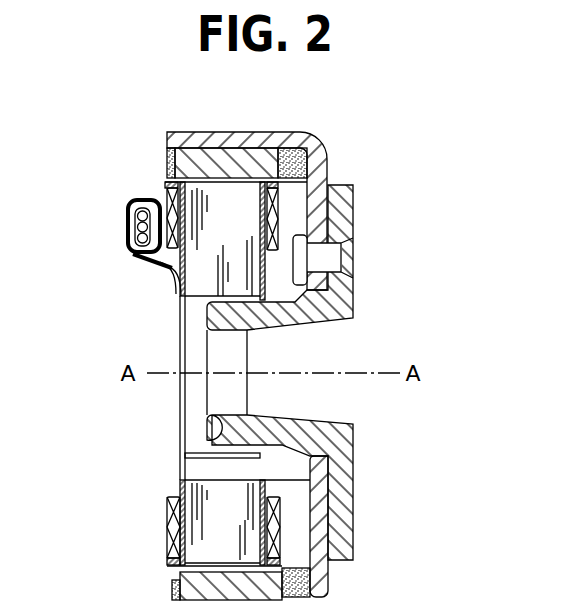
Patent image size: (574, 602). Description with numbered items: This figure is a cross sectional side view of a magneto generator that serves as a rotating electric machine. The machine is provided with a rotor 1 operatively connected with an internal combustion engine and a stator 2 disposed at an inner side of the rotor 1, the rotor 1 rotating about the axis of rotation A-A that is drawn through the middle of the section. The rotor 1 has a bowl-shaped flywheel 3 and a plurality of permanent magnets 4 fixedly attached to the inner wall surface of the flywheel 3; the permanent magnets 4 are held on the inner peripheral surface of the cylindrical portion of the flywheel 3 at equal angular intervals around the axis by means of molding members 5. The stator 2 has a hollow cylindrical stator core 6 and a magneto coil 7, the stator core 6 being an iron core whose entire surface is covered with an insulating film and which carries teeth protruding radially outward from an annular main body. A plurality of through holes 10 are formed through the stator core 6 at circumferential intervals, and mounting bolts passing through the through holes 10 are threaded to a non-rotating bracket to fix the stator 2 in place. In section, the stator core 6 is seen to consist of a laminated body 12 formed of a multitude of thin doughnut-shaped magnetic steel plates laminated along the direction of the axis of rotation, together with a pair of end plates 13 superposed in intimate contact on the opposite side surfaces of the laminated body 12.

The rotor 1 is at (323, 303).
The stator 2 is at (167, 537).
The flywheel 3 is at (290, 137).
The permanent magnets 4 is at (198, 158).
The molding members 5 is at (320, 155).
The stator core 6 is at (179, 294).
The magneto coil 7 is at (165, 197).
The through holes 10 is at (199, 466).
The laminated body 12 is at (221, 513).
The end plates 13 is at (171, 563).